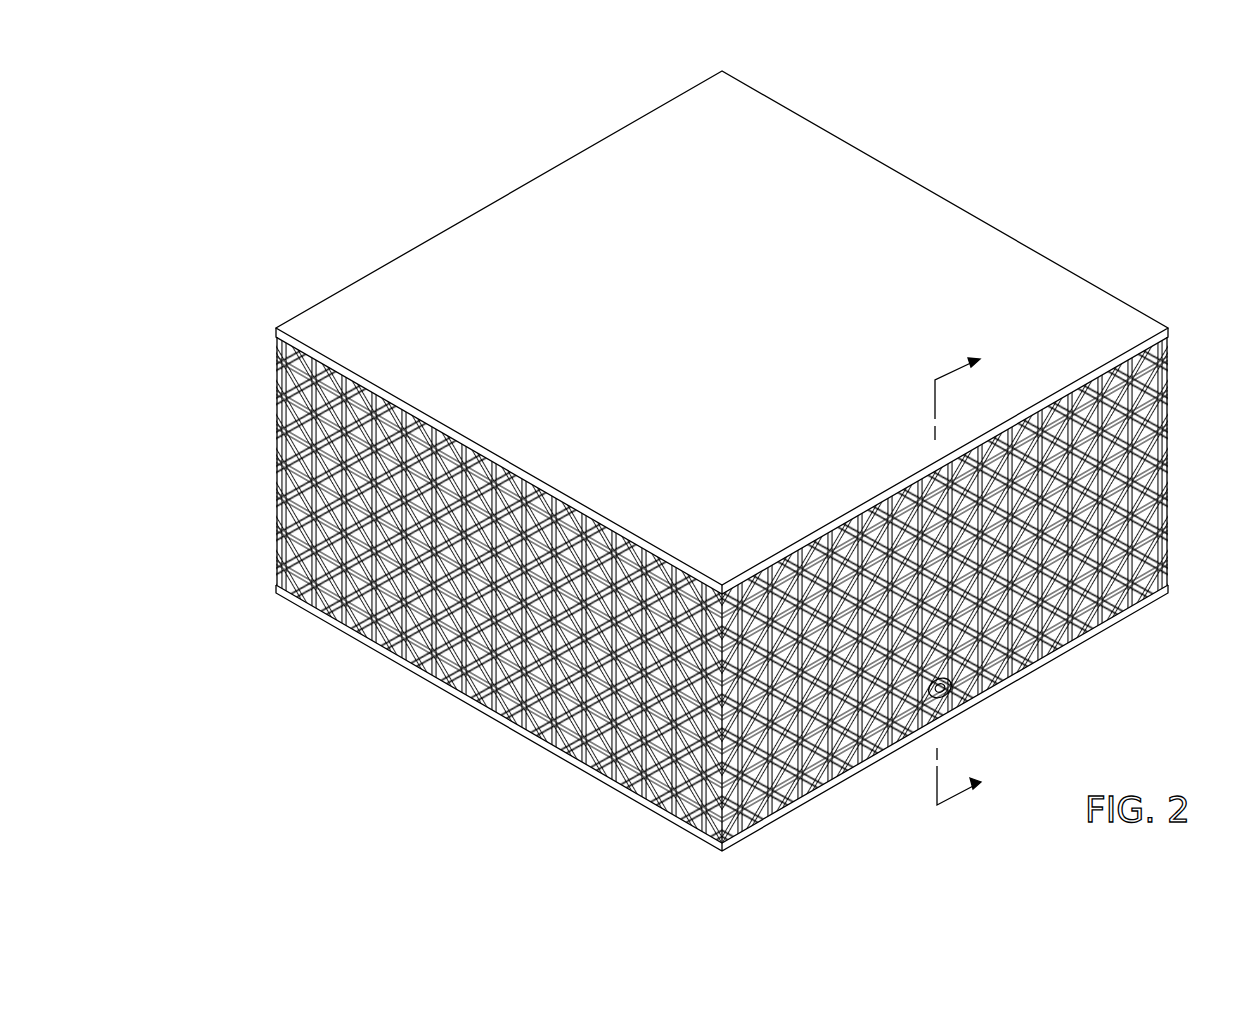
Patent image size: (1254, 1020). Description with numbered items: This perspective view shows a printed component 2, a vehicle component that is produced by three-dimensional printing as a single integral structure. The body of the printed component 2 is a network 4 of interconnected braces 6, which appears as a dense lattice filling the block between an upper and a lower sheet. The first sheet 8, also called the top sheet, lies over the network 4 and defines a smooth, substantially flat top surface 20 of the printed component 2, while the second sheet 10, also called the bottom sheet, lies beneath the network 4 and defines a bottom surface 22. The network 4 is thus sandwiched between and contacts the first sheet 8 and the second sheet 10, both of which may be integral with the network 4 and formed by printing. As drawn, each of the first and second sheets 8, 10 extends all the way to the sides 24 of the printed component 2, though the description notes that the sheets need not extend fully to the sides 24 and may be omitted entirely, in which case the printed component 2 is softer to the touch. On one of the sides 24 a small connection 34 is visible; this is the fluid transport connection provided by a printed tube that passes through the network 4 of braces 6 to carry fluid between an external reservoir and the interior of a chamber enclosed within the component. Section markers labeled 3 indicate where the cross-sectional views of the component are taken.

The printed component 2 is at (305, 95).
The network 4 is at (262, 588).
The braces 6 is at (355, 545).
The first sheet 8 is at (522, 218).
The second sheet 10 is at (666, 822).
The top surface 20 is at (937, 226).
The bottom surface 22 is at (840, 792).
The sides 24 is at (1173, 469).
The connection 34 is at (963, 703).
The section line for FIGS. 3 and 4 3 is at (980, 570).